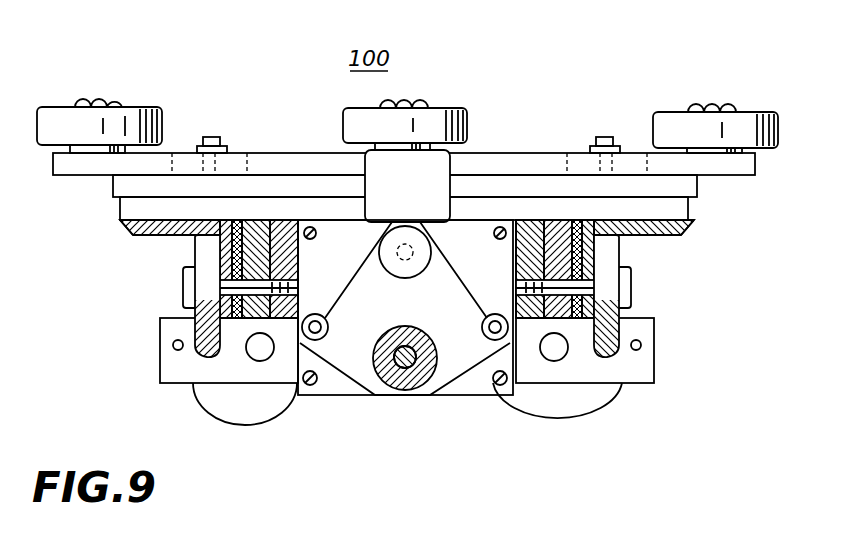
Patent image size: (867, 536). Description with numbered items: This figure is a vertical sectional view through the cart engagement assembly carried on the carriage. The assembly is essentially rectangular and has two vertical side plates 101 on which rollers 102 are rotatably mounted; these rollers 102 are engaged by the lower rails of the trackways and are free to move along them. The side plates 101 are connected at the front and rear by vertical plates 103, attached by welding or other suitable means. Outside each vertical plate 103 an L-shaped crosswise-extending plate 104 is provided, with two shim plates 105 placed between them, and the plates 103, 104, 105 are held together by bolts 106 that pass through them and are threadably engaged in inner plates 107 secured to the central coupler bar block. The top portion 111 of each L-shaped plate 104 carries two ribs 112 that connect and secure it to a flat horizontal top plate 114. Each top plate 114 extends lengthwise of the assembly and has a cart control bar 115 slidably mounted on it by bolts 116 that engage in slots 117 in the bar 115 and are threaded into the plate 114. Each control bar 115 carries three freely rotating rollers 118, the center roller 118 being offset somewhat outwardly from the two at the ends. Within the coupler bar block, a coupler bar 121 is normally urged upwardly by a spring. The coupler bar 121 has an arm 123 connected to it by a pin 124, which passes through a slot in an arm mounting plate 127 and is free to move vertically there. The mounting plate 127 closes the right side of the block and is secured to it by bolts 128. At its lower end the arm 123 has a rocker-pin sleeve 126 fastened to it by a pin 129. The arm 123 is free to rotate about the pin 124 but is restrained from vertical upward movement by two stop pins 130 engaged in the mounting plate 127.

The vertical side plate 101 is at (643, 357).
The roller 102 is at (292, 398).
The vertical plate 103 is at (246, 236).
The L-shaped crosswise-extending plate 104 is at (177, 236).
The shim plate 105 is at (242, 272).
The bolt 106 is at (247, 318).
The inner plate 107 is at (290, 250).
The top portion 111 is at (133, 232).
The rib 112 is at (690, 218).
The flat horizontal top plate 114 is at (682, 187).
The cart control bar 115 is at (735, 167).
The bolt 116 is at (212, 136).
The slot 117 is at (240, 156).
The roller 118 is at (143, 118).
The coupler bar 121 is at (432, 190).
The arm 123 is at (486, 372).
The pin 124 is at (428, 245).
The rocker-pin sleeve 126 is at (444, 390).
The arm mounting plate 127 is at (332, 386).
The bolt 128 is at (303, 392).
The pin 129 is at (406, 370).
The stop pin 130 is at (318, 322).